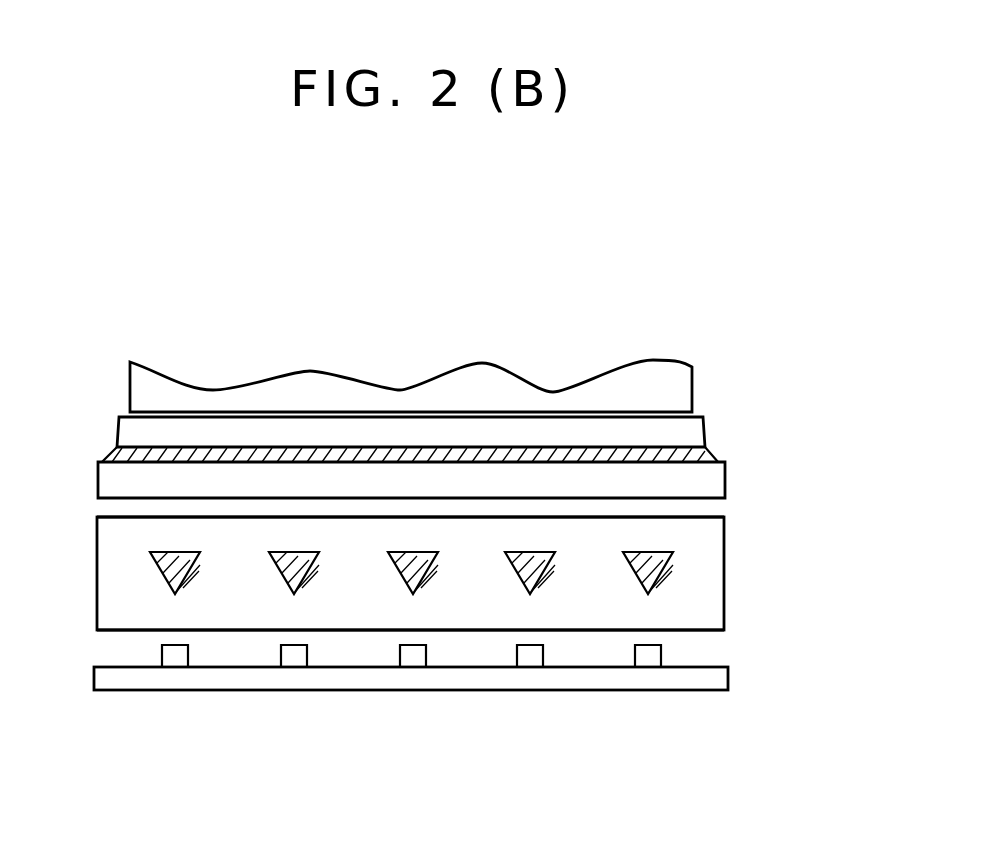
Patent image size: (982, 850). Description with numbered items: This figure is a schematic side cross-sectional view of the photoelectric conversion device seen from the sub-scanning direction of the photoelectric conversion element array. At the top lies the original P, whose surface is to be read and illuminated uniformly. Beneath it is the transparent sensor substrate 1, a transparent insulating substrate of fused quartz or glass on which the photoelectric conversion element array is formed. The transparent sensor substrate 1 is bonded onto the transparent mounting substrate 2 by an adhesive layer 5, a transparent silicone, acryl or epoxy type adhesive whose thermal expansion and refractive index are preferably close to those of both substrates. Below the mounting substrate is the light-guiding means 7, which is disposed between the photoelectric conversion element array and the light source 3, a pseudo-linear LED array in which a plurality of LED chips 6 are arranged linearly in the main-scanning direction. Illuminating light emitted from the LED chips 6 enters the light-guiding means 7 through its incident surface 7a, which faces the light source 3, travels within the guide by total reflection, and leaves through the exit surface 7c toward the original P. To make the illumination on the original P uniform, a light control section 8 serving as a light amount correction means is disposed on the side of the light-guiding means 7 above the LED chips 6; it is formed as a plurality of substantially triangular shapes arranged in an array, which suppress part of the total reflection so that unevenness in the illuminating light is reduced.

The original P is at (623, 388).
The transparent sensor substrate 1 is at (683, 433).
The adhesive layer 5 is at (708, 458).
The transparent mounting substrate 2 is at (710, 484).
The light-guiding means 7 is at (668, 536).
The exit surface 7c is at (117, 514).
The incident surface 7a is at (120, 630).
The light control section 8 is at (650, 579).
The light source 3 is at (688, 676).
The LED chips 6 is at (530, 667).